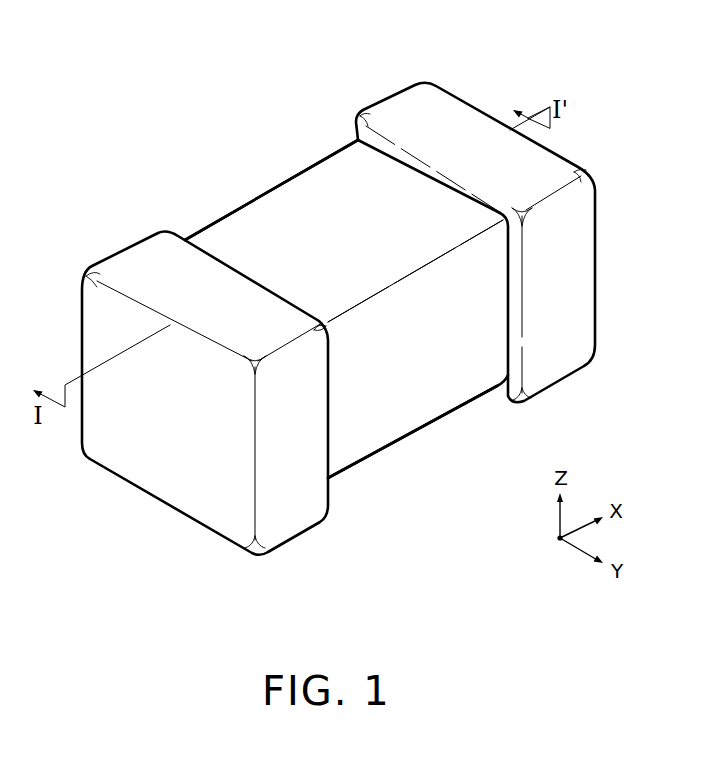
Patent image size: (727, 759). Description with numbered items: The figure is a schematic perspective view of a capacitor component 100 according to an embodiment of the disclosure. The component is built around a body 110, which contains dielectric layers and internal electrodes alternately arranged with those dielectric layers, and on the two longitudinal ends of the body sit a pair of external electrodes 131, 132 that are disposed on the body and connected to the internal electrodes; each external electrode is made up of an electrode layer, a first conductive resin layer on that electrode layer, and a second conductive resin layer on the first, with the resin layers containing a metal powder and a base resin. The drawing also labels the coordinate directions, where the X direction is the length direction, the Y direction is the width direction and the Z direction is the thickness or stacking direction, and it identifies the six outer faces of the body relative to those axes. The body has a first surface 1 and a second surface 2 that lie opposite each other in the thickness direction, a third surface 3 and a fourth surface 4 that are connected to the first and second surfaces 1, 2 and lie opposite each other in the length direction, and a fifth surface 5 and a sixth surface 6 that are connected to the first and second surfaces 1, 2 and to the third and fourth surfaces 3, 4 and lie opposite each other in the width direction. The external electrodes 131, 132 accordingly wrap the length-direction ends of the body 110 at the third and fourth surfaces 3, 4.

The capacitor component 100 is at (92, 91).
The body 110 is at (339, 294).
The external electrode 131 is at (205, 369).
The external electrode 132 is at (503, 220).
The first surface 1 is at (378, 400).
The second surface 2 is at (352, 198).
The third surface 3 is at (173, 450).
The fourth surface 4 is at (543, 254).
The fifth surface 5 is at (437, 372).
The sixth surface 6 is at (300, 220).